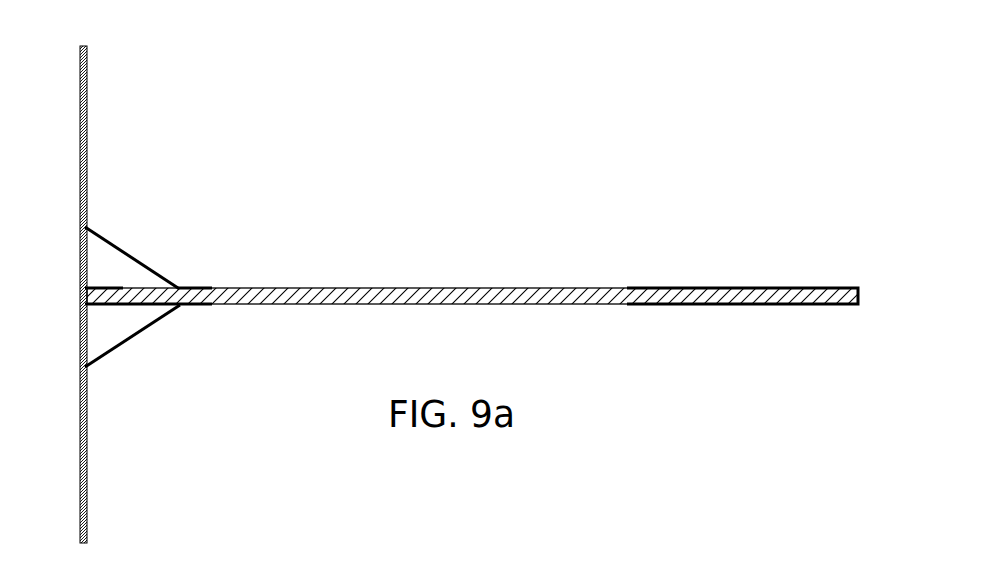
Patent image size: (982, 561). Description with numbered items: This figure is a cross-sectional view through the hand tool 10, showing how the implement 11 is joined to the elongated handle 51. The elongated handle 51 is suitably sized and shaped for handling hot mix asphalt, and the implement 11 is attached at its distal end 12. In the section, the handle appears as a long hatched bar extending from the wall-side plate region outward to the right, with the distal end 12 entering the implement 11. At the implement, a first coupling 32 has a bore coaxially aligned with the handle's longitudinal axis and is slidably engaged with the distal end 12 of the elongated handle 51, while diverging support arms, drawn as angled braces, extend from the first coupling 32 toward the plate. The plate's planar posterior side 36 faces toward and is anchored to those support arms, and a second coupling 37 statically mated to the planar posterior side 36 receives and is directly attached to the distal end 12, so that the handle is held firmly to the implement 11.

The hand tool 10 is at (472, 219).
The implement 11 is at (163, 278).
The distal end 12 is at (97, 300).
The first coupling 32 is at (198, 288).
The planar posterior side 36 is at (85, 342).
The second coupling 37 is at (113, 305).
The elongated handle 51 is at (585, 288).